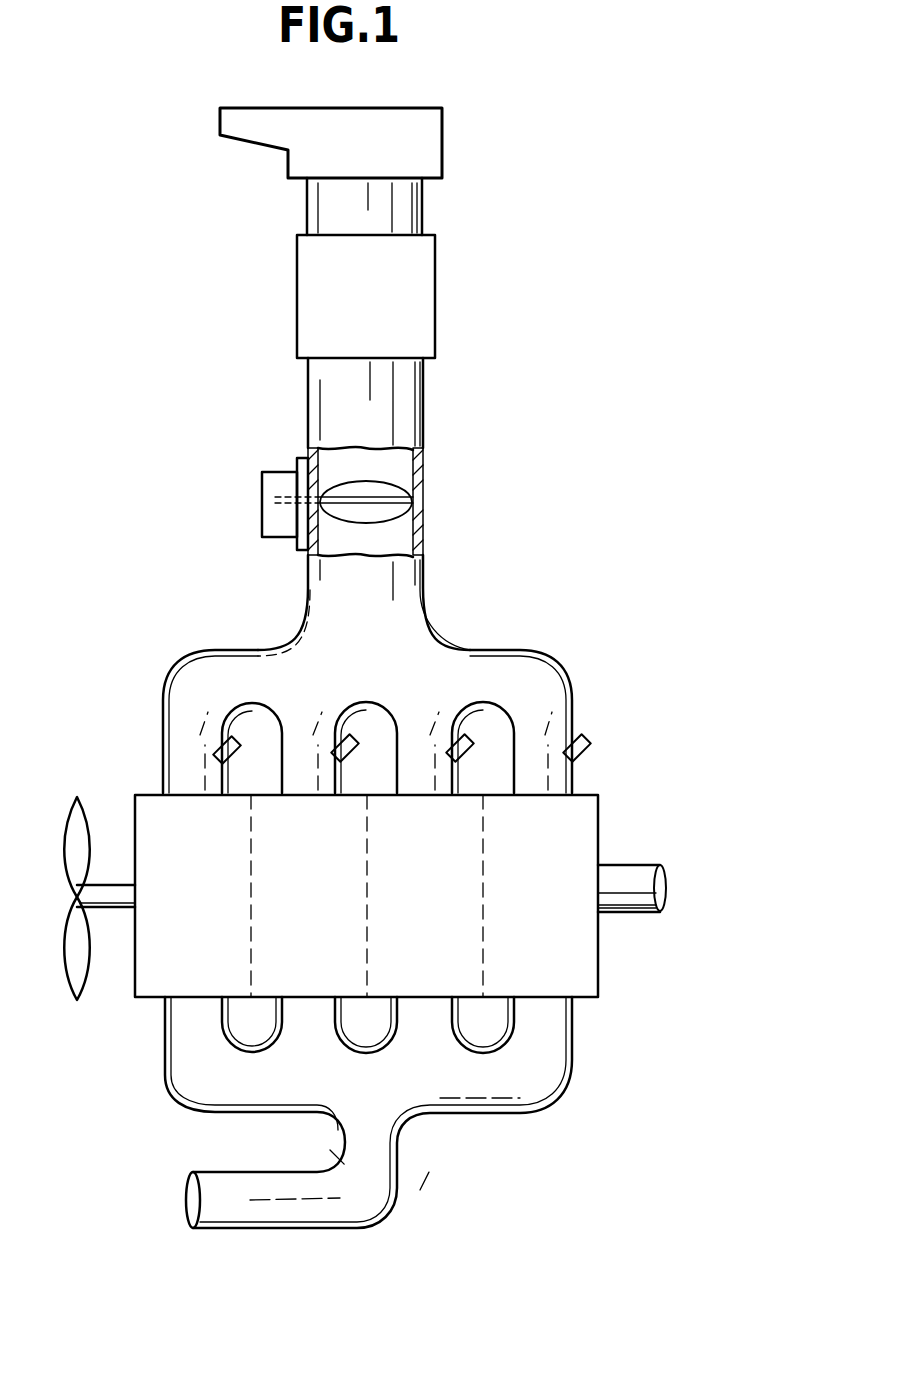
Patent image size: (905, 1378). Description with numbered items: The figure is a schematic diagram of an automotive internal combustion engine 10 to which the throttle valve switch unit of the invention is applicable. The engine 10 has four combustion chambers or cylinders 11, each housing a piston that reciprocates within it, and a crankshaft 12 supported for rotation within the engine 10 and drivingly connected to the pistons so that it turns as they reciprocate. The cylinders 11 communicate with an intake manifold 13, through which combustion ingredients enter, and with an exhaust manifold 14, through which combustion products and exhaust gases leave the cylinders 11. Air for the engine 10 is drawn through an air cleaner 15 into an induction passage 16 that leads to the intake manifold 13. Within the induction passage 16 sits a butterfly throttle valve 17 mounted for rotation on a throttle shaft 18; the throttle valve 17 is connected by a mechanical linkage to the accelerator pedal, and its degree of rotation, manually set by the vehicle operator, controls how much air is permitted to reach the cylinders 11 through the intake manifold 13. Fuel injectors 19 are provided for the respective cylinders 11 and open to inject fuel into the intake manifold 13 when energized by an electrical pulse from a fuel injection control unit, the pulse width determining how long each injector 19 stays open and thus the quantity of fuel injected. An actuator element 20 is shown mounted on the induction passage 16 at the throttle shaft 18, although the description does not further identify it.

The internal combustion engine 10 is at (133, 815).
The cylinders 11 is at (167, 975).
The crankshaft 12 is at (625, 898).
The intake manifold 13 is at (487, 660).
The exhaust manifold 14 is at (488, 1113).
The air cleaner 15 is at (443, 142).
The induction passage 16 is at (425, 392).
The butterfly throttle valve 17 is at (383, 493).
The throttle shaft 18 is at (377, 503).
The fuel injectors 19 is at (215, 752).
The throttle actuator 20 is at (262, 512).